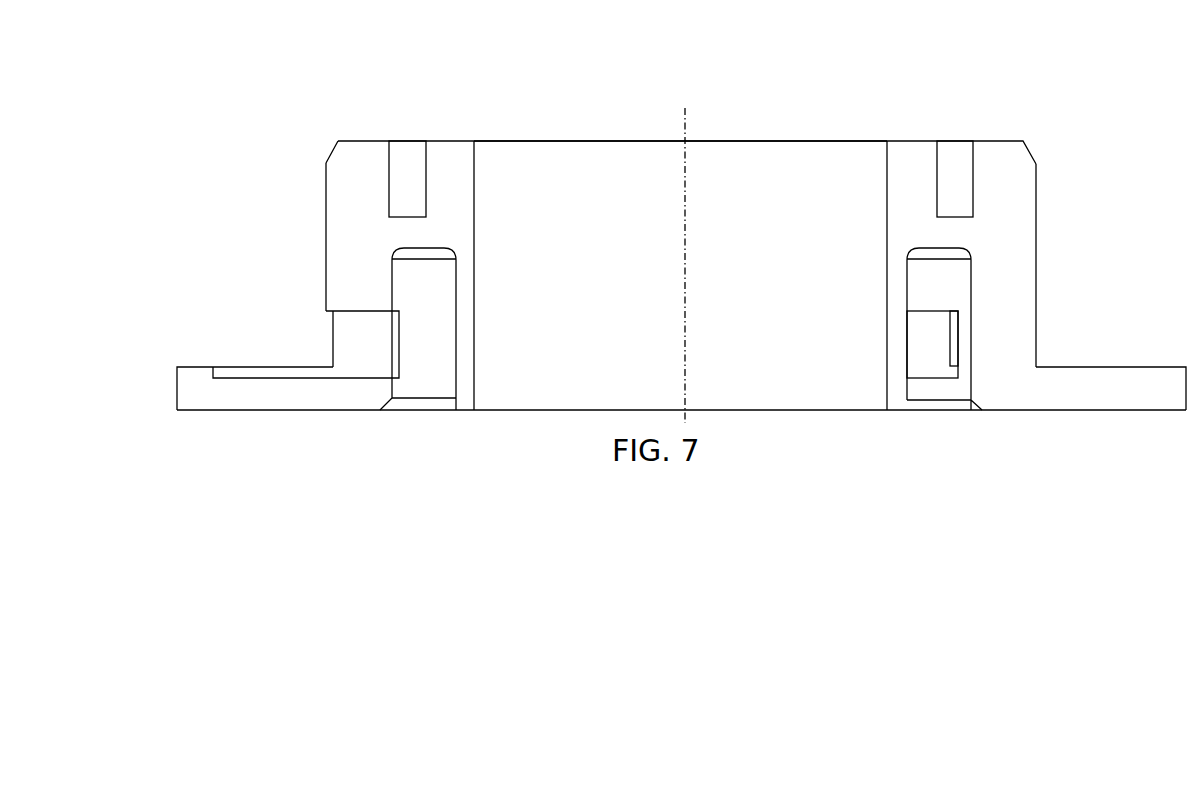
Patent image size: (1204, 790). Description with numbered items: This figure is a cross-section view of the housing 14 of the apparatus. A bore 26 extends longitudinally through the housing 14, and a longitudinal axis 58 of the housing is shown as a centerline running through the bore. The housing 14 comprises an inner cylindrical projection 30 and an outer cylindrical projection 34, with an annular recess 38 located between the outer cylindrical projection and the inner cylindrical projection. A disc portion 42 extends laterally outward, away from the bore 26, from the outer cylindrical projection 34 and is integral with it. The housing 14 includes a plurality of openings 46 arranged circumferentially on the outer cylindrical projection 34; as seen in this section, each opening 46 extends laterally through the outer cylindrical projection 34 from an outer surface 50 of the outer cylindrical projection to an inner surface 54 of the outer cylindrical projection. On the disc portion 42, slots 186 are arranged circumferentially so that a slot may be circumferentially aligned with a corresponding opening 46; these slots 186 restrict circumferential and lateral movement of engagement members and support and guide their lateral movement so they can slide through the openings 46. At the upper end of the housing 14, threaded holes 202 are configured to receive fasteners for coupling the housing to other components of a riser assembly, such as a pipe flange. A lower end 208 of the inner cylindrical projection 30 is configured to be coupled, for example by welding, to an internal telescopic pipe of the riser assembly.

The housing 14 is at (1040, 113).
The bore 26 is at (793, 136).
The inner cylindrical projection 30 is at (475, 330).
The outer cylindrical projection 34 is at (326, 285).
The annular recess 38 is at (424, 364).
The disc portion 42 is at (1095, 367).
The opening 46 is at (338, 346).
The outer surface 50 is at (1036, 307).
The inner surface 54 is at (970, 302).
The longitudinal axis 58 is at (685, 262).
The slot 186 is at (226, 375).
The hole 202 is at (390, 152).
The lower end 208 is at (893, 410).